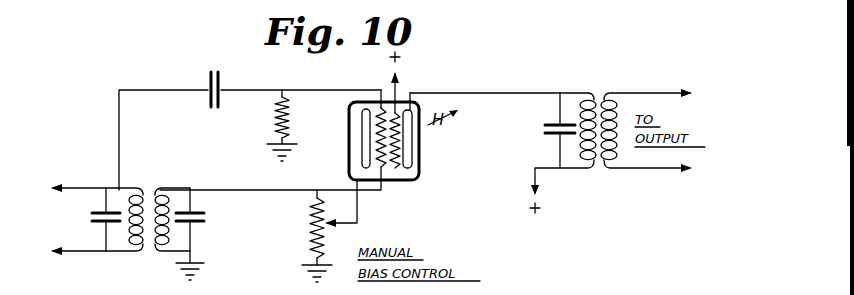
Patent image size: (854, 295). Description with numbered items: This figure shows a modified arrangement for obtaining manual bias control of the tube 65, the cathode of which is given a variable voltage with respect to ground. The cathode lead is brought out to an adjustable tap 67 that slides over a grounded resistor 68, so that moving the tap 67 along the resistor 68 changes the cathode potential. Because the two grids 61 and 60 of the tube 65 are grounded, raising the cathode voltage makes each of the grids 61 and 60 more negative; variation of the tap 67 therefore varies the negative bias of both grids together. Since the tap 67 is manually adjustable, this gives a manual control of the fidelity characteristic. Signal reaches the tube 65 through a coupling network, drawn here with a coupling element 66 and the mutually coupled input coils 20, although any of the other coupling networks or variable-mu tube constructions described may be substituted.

The mutual inductance coupling M20 of input transformer 20 is at (164, 254).
The grid 60 is at (382, 170).
The grid 61 is at (385, 108).
The tube 65 is at (404, 100).
The coupling capacitor 66 is at (222, 72).
The adjustable tap 67 is at (333, 205).
The grounded resistor 68 is at (308, 236).